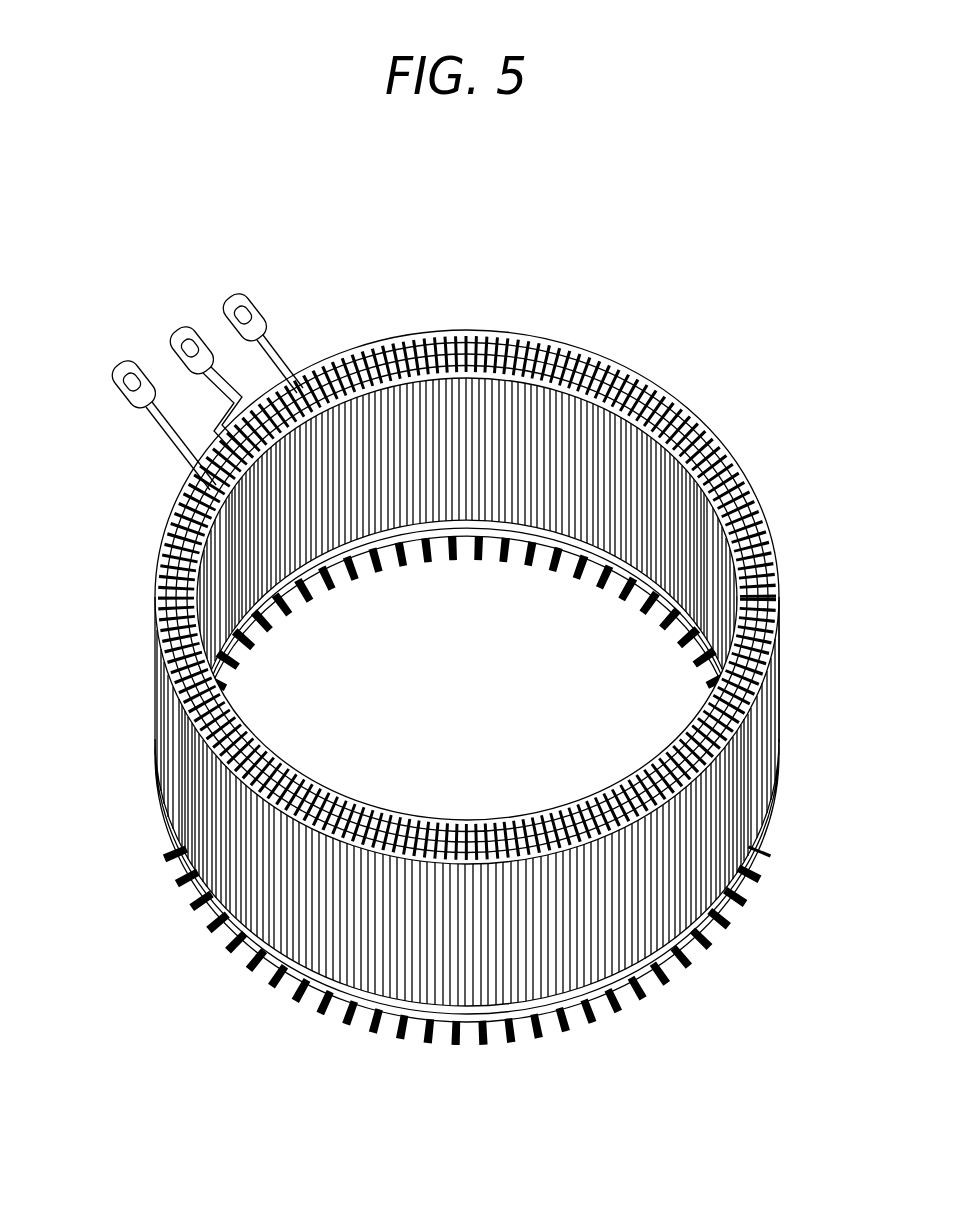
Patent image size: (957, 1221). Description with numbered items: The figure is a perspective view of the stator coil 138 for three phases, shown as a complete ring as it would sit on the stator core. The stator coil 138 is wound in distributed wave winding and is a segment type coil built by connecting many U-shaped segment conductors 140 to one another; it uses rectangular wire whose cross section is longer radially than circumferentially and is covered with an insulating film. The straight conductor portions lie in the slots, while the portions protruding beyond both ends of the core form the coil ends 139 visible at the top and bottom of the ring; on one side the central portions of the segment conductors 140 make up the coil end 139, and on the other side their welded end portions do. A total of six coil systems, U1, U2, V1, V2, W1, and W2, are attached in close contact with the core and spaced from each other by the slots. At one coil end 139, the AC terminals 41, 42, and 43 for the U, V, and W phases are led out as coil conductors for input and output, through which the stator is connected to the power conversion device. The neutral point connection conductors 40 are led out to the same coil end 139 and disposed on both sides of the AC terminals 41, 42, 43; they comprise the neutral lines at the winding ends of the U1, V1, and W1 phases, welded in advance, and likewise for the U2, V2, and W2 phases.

The neutral point connection conductor 40 is at (478, 637).
The AC terminal (U) 41 is at (271, 298).
The AC terminal (V) 42 is at (153, 361).
The AC terminal (W) 43 is at (125, 413).
The stator coil 138 is at (478, 637).
The coil end 139 is at (765, 485).
The segment conductor 140 is at (525, 330).
The U1-phase coil U1 is at (303, 358).
The U2-phase coil U2 is at (280, 340).
The V1-phase coil V1 is at (231, 365).
The V2-phase coil V2 is at (213, 413).
The W1-phase coil W1 is at (176, 447).
The W2-phase coil W2 is at (185, 463).